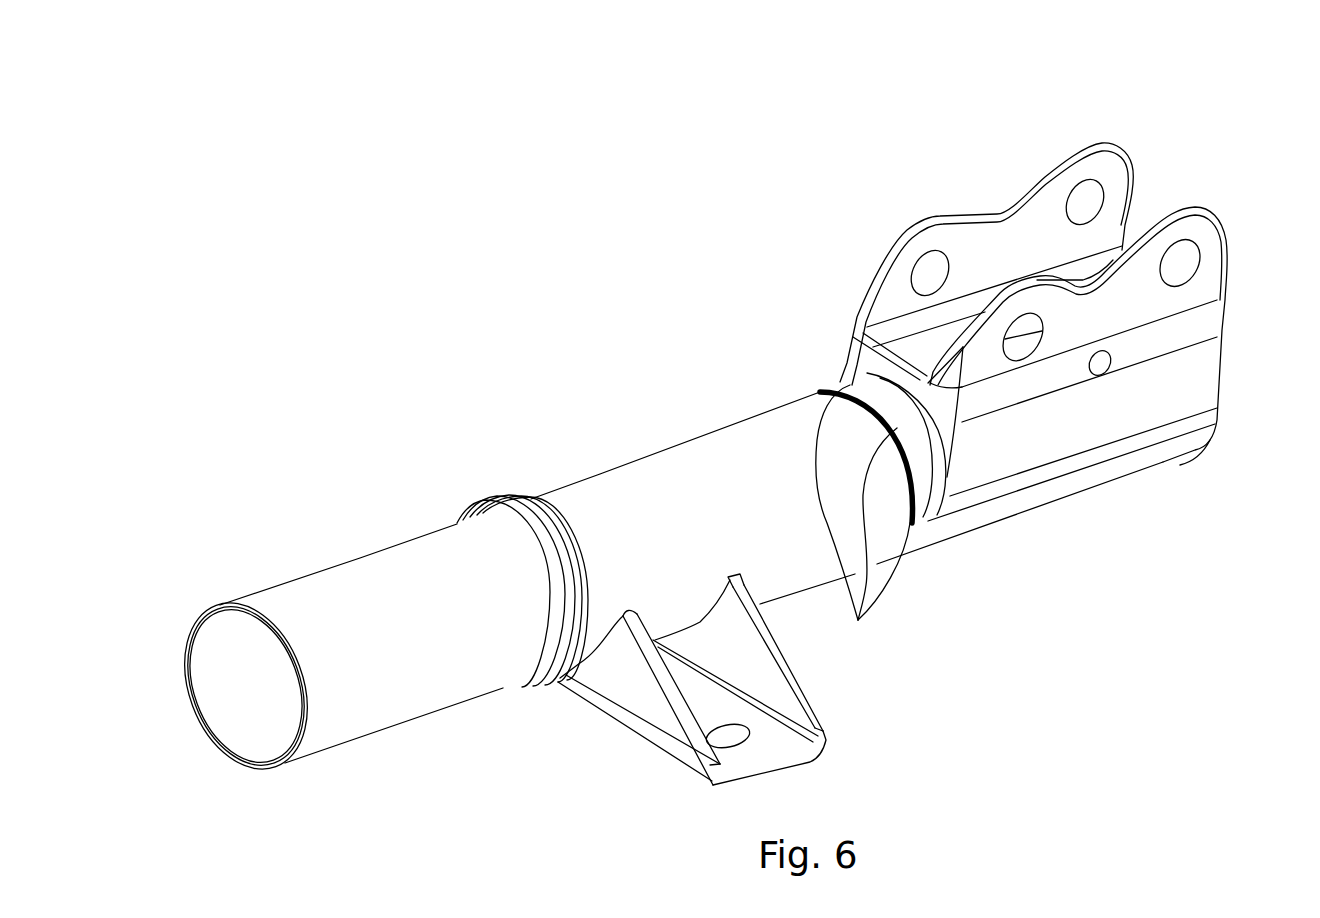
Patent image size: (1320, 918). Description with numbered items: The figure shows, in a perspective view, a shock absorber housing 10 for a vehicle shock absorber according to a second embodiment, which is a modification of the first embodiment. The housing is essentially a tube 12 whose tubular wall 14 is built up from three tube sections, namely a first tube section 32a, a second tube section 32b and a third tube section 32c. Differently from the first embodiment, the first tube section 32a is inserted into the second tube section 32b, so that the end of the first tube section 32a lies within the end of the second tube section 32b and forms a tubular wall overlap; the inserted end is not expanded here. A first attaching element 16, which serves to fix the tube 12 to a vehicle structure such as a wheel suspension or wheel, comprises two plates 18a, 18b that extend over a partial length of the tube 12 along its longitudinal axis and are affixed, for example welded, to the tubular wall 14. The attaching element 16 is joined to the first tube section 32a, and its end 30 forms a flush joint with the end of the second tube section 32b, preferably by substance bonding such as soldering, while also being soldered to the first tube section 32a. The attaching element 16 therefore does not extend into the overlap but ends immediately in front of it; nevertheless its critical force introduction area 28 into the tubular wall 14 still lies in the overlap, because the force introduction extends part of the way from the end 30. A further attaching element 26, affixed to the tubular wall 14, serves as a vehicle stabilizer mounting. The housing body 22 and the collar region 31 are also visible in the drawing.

The shock absorber housing 10 is at (595, 176).
The tube 12 is at (549, 466).
The tubular wall 14 is at (705, 480).
The first attaching element 16 is at (970, 172).
The plate 18a is at (968, 240).
The plate 18b is at (1127, 305).
The housing body 22 is at (1152, 457).
The further attaching element 26 is at (667, 727).
The force introduction area 28 is at (859, 618).
The end of the attaching element 30 is at (847, 378).
The collar 31 is at (877, 363).
The first tube section 32a is at (1082, 480).
The second tube section 32b is at (617, 493).
The third tube section 32c is at (340, 583).